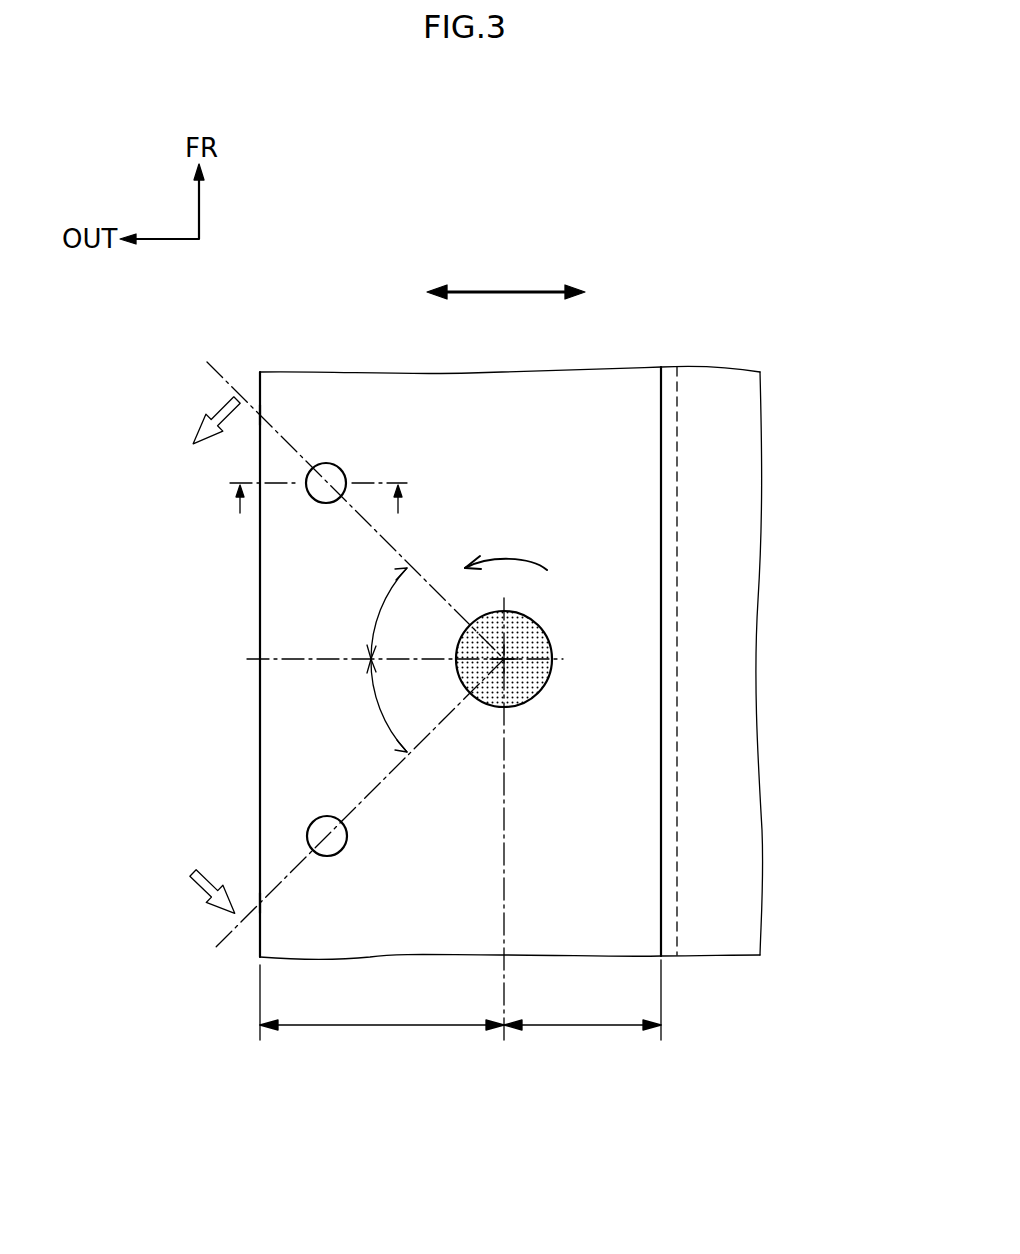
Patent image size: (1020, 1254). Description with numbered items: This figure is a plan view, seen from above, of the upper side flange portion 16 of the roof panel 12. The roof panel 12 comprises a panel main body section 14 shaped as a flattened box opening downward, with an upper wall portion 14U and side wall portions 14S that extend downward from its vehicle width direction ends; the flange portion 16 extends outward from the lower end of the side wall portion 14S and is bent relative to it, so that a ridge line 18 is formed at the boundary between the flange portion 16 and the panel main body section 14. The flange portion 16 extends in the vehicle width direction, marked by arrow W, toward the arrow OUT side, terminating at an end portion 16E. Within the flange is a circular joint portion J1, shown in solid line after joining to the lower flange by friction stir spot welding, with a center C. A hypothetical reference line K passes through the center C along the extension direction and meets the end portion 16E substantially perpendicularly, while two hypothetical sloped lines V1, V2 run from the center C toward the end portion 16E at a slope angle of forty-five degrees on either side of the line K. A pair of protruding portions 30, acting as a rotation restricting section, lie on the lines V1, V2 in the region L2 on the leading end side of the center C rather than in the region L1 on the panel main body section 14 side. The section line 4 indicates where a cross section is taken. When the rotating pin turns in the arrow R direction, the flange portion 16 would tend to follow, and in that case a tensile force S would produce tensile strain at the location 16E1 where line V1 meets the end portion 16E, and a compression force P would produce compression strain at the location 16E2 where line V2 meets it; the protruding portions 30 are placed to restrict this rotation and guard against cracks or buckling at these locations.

The roof panel 12 is at (800, 645).
The panel main body section 14 is at (747, 773).
The side wall portion 14S is at (677, 905).
The upper wall portion 14U is at (738, 838).
The flange portion 16 is at (578, 932).
The end portion 16E is at (283, 622).
The location of end portion intersected by hypothetical sloped line V1 16E1 is at (259, 417).
The location of end portion intersected by hypothetical sloped line V2 16E2 is at (259, 903).
The ridge line 18 is at (659, 853).
The protruding portions 30 is at (352, 464).
The section line 4- 4 is at (320, 521).
The joint portion J1 is at (551, 630).
The center of joint portion C is at (504, 672).
The hypothetical reference line K is at (298, 664).
The hypothetical sloped line V1 is at (285, 438).
The hypothetical sloped line V2 is at (375, 792).
The rotation direction R is at (510, 560).
The tensile force S is at (208, 410).
The compression force P is at (199, 892).
The width direction W is at (510, 291).
The location on panel main body section side L1 is at (576, 1026).
The location on extension direction leading end side L2 is at (385, 1026).